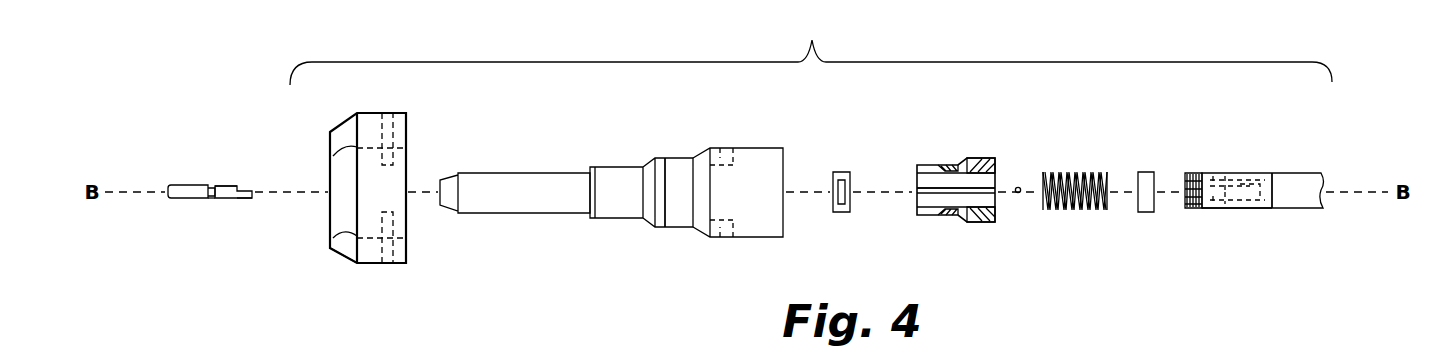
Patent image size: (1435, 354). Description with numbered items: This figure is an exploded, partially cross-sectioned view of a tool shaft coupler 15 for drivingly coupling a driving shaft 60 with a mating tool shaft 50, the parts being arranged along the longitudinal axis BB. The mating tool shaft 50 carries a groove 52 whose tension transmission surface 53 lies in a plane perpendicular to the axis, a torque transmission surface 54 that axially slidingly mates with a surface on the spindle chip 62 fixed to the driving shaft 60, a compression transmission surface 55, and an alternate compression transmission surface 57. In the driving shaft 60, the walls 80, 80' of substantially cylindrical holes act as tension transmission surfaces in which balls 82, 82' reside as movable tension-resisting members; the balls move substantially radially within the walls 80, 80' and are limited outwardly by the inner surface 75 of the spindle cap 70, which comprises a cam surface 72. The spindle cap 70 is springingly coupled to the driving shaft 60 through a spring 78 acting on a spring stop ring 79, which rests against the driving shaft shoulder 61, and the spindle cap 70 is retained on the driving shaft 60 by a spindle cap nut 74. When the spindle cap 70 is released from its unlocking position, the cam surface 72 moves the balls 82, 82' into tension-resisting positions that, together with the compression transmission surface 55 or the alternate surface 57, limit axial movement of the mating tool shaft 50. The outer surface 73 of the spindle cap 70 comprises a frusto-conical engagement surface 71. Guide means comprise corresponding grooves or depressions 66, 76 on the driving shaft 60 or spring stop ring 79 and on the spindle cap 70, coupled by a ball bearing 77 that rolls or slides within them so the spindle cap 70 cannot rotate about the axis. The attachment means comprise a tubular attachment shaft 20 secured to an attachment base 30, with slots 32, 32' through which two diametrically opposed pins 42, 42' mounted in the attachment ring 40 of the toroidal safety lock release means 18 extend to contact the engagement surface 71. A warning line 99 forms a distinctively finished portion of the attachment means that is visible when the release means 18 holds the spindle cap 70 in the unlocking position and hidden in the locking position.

The tool shaft coupler 15 is at (811, 48).
The toroidal safety lock release means 18 is at (318, 262).
The tubular attachment shaft 20 is at (517, 214).
The attachment base 30 is at (621, 219).
The slot 32 is at (741, 169).
The slot 32' is at (756, 251).
The attachment ring 40 is at (348, 126).
The radially directed pin 42 is at (405, 122).
The radially directed pin 42' is at (360, 255).
The mating tool shaft 50 is at (182, 201).
The groove 52 is at (209, 185).
The tension transmission surface 53 is at (213, 199).
The torque transmission surface 54 is at (246, 189).
The compression transmission surface 55 is at (253, 197).
The alternate compression transmission surface 57 is at (241, 185).
The driving shaft 60 is at (1319, 209).
The driving shaft shoulder 61 is at (1272, 209).
The spindle chip 62 is at (1290, 188).
The groove or depression 66 is at (1186, 194).
The spindle cap 70 is at (950, 204).
The engagement surface 71 is at (968, 159).
The cam surface 72 is at (917, 206).
The outer surface of spindle cap 73 is at (943, 163).
The spindle cap nut 74 is at (841, 171).
The inner surface of spindle cap 75 is at (994, 206).
The groove or depression 76 is at (916, 189).
The ball bearing 77 is at (1018, 186).
The spring 78 is at (1079, 209).
The spring stop ring 79 is at (1147, 213).
The wall of substantially cylindrical hole 80 is at (1200, 172).
The wall of substantially cylindrical hole 80' is at (1201, 214).
The ball 82 is at (1237, 173).
The ball 82' is at (1237, 212).
The warning line 99 is at (669, 209).